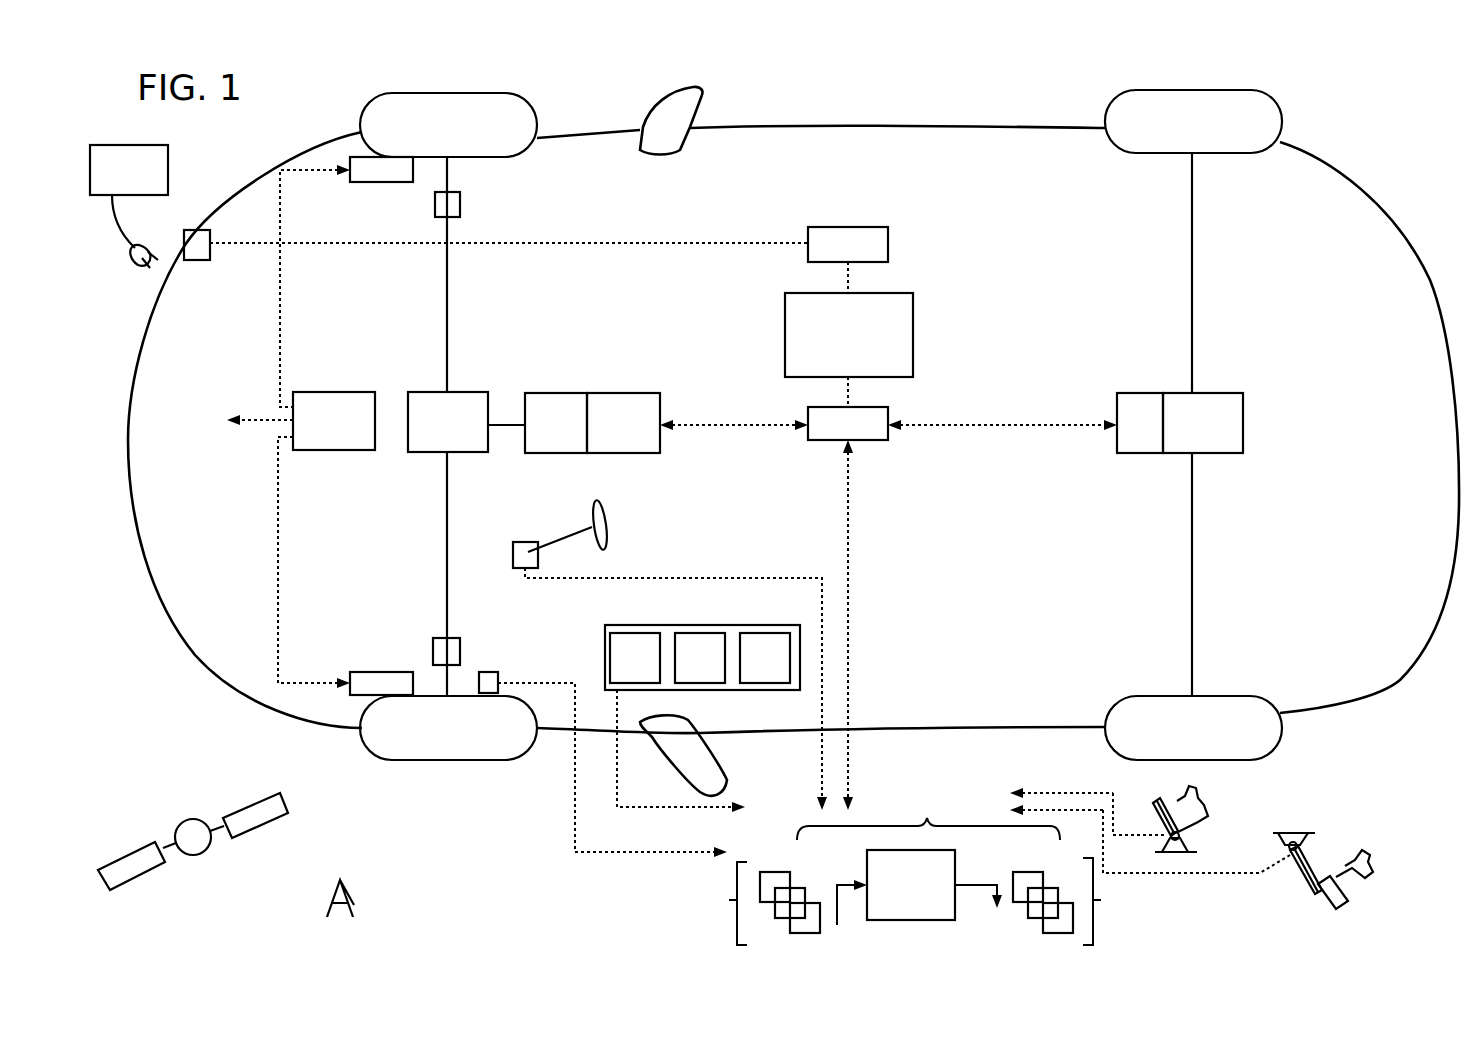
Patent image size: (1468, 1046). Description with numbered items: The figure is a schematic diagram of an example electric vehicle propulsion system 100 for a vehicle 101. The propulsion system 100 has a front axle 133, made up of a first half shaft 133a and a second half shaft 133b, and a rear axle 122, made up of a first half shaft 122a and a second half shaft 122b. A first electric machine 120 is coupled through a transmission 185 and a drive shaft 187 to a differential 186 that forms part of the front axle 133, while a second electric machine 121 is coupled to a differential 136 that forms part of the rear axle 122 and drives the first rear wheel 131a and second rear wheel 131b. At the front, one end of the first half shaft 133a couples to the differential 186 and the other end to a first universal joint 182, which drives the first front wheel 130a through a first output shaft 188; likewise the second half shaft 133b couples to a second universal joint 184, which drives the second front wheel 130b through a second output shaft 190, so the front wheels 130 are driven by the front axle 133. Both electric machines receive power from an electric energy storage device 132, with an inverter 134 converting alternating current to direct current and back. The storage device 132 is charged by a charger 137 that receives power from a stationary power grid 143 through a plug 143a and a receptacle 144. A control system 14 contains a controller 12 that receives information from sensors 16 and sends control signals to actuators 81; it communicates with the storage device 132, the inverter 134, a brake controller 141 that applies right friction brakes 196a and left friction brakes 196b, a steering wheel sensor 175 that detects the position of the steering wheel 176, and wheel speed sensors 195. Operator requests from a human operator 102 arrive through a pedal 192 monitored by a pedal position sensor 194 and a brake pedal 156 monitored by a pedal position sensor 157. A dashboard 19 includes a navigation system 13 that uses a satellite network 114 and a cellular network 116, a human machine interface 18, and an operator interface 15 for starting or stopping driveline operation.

The electric vehicle propulsion system 100 is at (995, 290).
The vehicle 101 is at (1400, 720).
The human operator 102 is at (1188, 806).
The controller 12 is at (570, 659).
The navigation system 13 is at (635, 658).
The control system 14 is at (928, 810).
The operator interface 15 is at (735, 628).
The sensors 16 is at (738, 903).
The human machine interface 18 is at (700, 658).
The dashboard 19 is at (702, 638).
The actuators 81 is at (1097, 901).
The satellite network 114 is at (200, 855).
The cellular network 116 is at (345, 905).
The first electric machine 120 is at (623, 423).
The second electric machine 121 is at (1140, 423).
The rear axle 122 is at (1225, 228).
The first half shaft 122a is at (1192, 205).
The second half shaft 122b is at (1192, 623).
The front wheels 130 is at (582, 95).
The first front wheel 130a is at (462, 93).
The second front wheel 130b is at (437, 760).
The first rear wheel 131a is at (1232, 90).
The second rear wheel 131b is at (1232, 760).
The electric energy storage device 132 is at (849, 335).
The front axle 133 is at (415, 504).
The first half shaft 133a is at (443, 305).
The second half shaft 133b is at (445, 548).
The inverter 134 is at (848, 423).
The differential 136 is at (1203, 423).
The charger 137 is at (848, 244).
The brake controller 141 is at (334, 421).
The stationary power grid 143 is at (129, 170).
The plug 143a is at (120, 228).
The receptacle 144 is at (198, 260).
The brake pedal 156 is at (1320, 892).
The pedal position sensor 157 is at (1288, 850).
The steering wheel sensor 175 is at (528, 542).
The steering wheel 176 is at (600, 500).
The first universal joint 182 is at (460, 198).
The second universal joint 184 is at (460, 645).
The transmission 185 is at (556, 423).
The differential 186 is at (448, 422).
The drive shaft 187 is at (505, 425).
The first output shaft 188 is at (442, 182).
The second output shaft 190 is at (442, 675).
The pedal 192 is at (1155, 822).
The pedal position sensor 194 is at (1182, 836).
The wheel speed sensors 195 is at (488, 672).
The right friction brakes 196a is at (381, 169).
The left friction brakes 196b is at (381, 683).